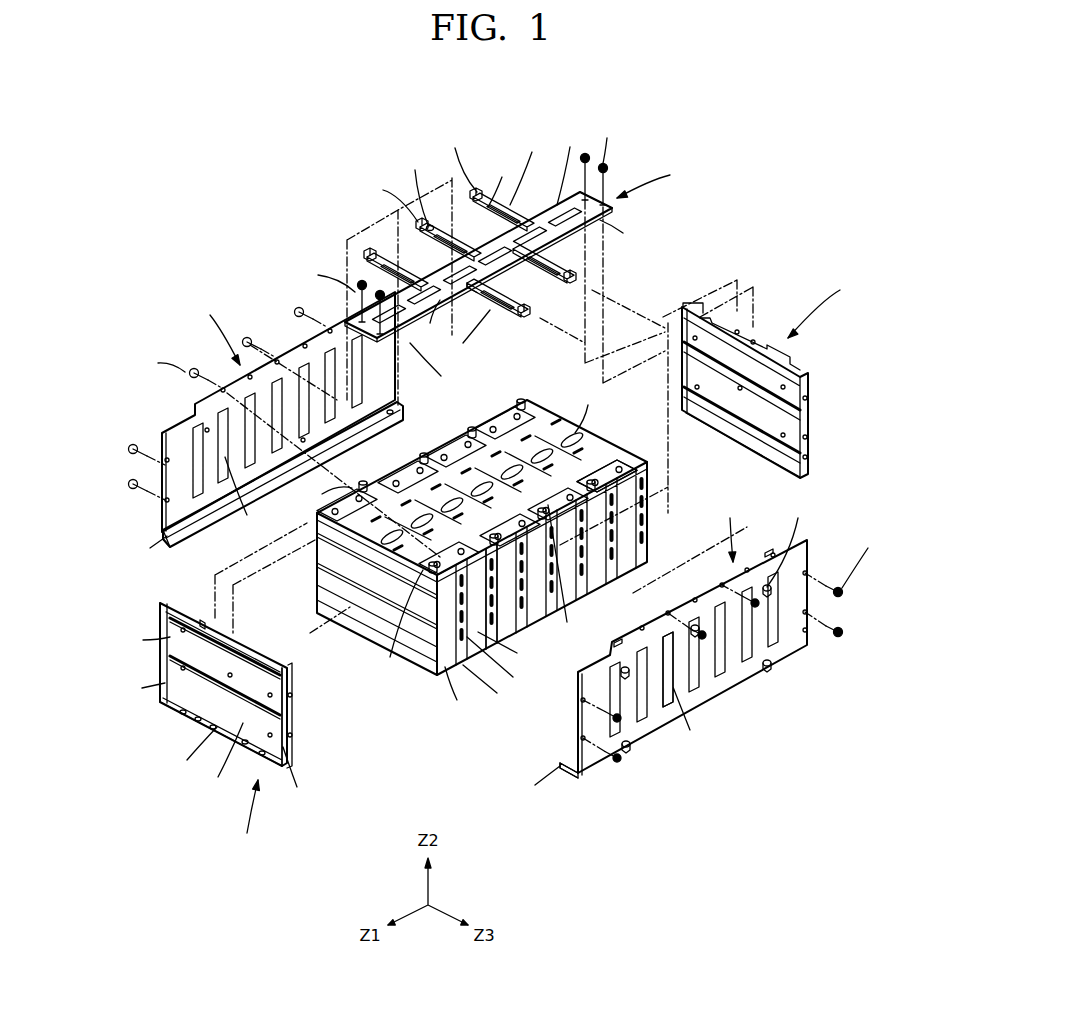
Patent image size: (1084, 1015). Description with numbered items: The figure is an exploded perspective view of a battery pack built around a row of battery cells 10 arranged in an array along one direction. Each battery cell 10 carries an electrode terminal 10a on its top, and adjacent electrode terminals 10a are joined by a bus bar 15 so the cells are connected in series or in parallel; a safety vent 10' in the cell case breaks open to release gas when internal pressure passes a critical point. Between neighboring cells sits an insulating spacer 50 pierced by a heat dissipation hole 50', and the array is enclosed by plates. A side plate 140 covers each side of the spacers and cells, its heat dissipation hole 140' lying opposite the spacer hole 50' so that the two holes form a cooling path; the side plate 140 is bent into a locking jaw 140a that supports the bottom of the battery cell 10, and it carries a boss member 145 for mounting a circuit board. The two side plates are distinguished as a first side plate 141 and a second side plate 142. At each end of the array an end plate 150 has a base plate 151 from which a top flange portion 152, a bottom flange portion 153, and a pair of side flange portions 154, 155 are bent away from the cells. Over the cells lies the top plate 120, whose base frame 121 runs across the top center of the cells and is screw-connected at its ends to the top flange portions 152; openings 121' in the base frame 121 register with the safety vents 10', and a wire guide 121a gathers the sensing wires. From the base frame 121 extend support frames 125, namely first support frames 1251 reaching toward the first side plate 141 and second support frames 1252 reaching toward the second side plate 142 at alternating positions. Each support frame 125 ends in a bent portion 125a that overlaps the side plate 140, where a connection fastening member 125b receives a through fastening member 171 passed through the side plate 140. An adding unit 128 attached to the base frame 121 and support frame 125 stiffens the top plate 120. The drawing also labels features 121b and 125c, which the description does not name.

The battery cell 10 is at (482, 553).
The safety vent 10' is at (606, 438).
The electrode terminal 10a is at (451, 593).
The bus bar 15 is at (283, 474).
The spacer 50 is at (552, 593).
The heat dissipation hole 50' is at (500, 619).
The top plate 120 is at (493, 251).
The base frame 121 is at (478, 234).
The opening 121' is at (618, 217).
The wire guide 121a is at (606, 161).
The fastening screw 121b is at (332, 298).
The support frame 125 is at (466, 258).
The bent portion 125a is at (458, 167).
The connection fastening member 125b is at (392, 203).
The bus bar nut 125c is at (412, 189).
The adding unit 128 is at (470, 223).
The first support frame 1251 is at (444, 313).
The second support frame 1252 is at (486, 335).
The side plate 140 is at (459, 544).
The heat dissipation hole 140' is at (688, 693).
The locking jaw 140a is at (342, 663).
The first side plate 141 is at (280, 419).
The second side plate 142 is at (685, 636).
The boss member 145 is at (716, 624).
The end plate 150 is at (489, 563).
The base plate 151 is at (231, 758).
The top flange portion 152 is at (157, 633).
The bottom flange portion 153 is at (217, 738).
The side flange portion 154 is at (138, 652).
The side flange portion 155 is at (299, 739).
The through fastening member 171 is at (506, 472).